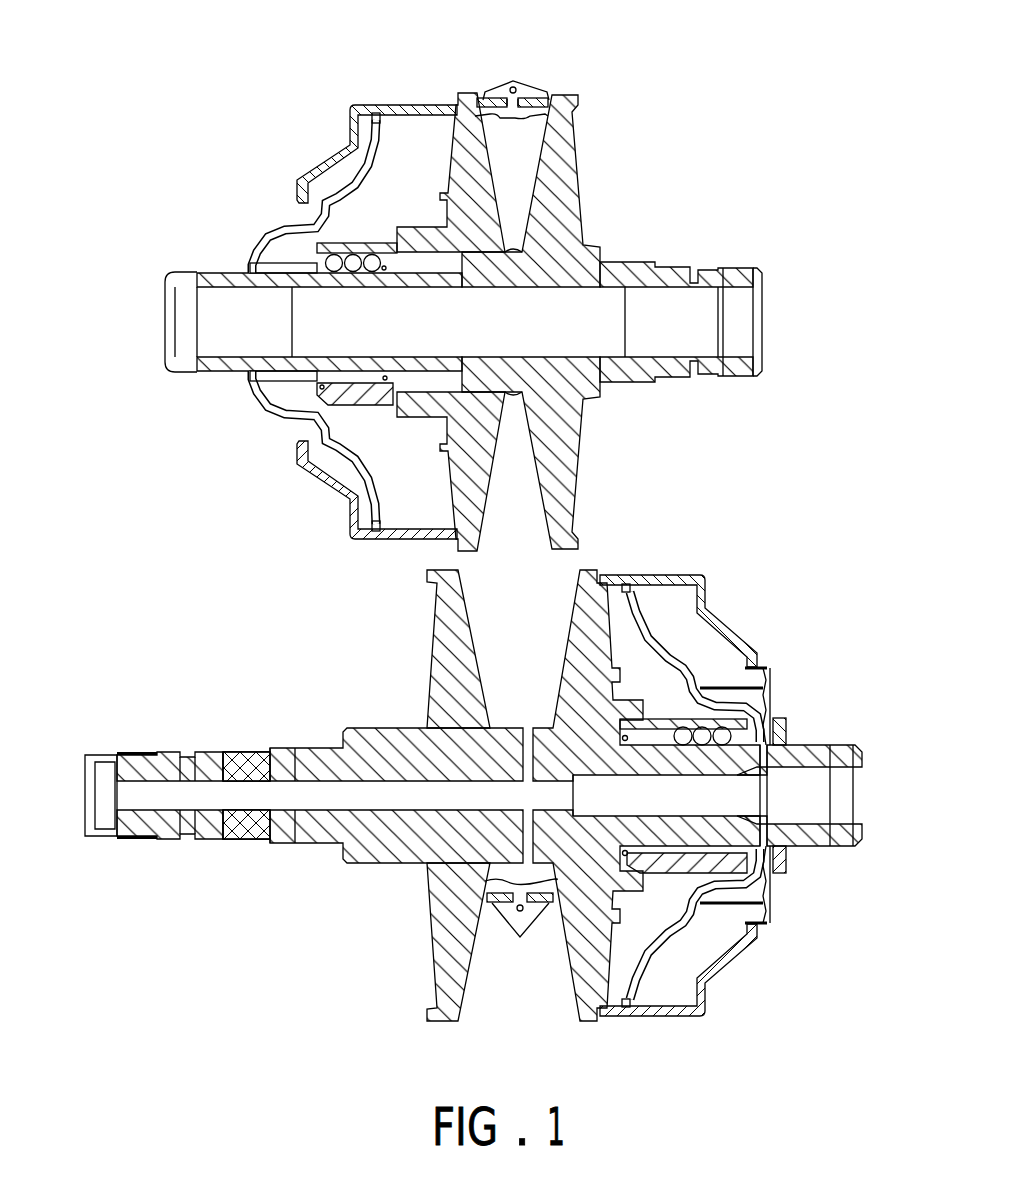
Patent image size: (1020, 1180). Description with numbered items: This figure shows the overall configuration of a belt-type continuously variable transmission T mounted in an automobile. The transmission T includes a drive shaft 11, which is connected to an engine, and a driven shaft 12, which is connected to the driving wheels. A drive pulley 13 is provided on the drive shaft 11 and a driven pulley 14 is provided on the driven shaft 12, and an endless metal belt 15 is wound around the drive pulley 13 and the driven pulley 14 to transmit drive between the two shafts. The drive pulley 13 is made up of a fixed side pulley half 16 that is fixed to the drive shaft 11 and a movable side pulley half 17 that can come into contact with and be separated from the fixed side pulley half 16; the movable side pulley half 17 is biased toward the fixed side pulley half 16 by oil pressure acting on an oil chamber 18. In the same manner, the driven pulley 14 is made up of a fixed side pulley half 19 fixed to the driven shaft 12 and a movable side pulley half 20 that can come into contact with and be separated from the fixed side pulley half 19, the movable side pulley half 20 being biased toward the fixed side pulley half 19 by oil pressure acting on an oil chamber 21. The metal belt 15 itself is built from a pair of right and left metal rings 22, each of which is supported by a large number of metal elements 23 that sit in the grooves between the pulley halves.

The drive shaft 11 is at (662, 262).
The driven shaft 12 is at (381, 730).
The drive pulley 13 is at (518, 322).
The driven pulley 14 is at (593, 780).
The metal belt 15 is at (533, 77).
The fixed side pulley half 16 is at (573, 217).
The movable side pulley half 17 is at (482, 158).
The oil chamber 18 is at (408, 201).
The fixed side pulley half 19 is at (462, 641).
The movable side pulley half 20 is at (578, 642).
The oil chamber 21 is at (655, 689).
The metal ring 22 is at (522, 938).
The metal element 23 is at (500, 90).
The belt-type continuously variable transmission T is at (258, 136).